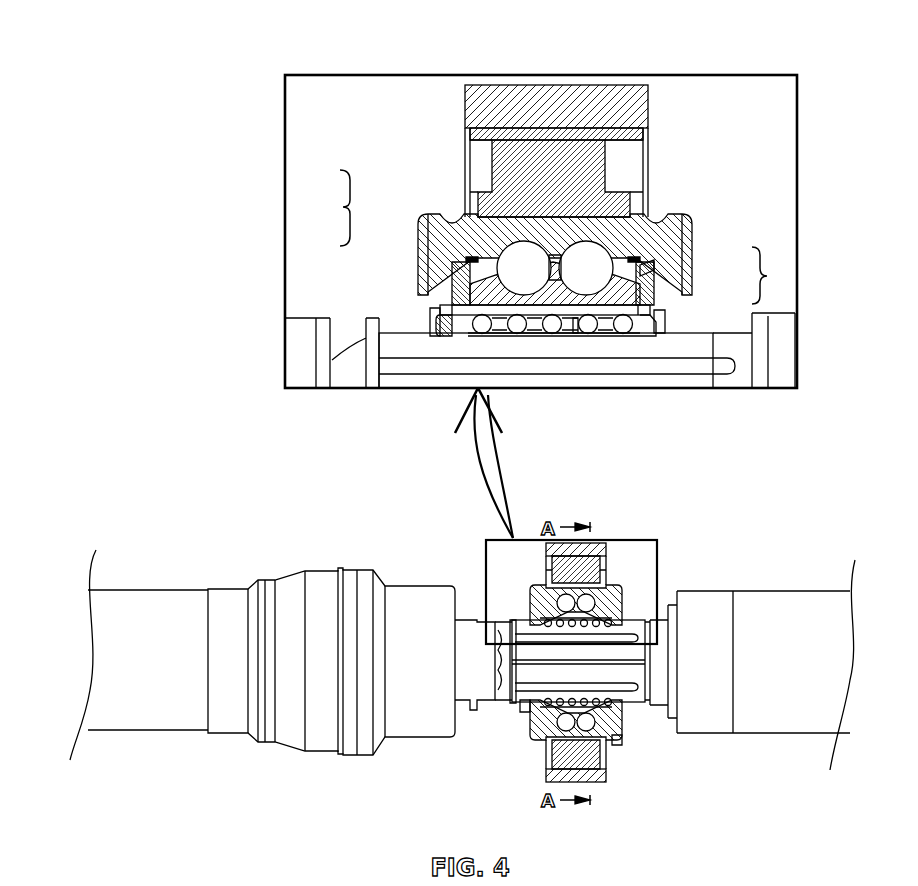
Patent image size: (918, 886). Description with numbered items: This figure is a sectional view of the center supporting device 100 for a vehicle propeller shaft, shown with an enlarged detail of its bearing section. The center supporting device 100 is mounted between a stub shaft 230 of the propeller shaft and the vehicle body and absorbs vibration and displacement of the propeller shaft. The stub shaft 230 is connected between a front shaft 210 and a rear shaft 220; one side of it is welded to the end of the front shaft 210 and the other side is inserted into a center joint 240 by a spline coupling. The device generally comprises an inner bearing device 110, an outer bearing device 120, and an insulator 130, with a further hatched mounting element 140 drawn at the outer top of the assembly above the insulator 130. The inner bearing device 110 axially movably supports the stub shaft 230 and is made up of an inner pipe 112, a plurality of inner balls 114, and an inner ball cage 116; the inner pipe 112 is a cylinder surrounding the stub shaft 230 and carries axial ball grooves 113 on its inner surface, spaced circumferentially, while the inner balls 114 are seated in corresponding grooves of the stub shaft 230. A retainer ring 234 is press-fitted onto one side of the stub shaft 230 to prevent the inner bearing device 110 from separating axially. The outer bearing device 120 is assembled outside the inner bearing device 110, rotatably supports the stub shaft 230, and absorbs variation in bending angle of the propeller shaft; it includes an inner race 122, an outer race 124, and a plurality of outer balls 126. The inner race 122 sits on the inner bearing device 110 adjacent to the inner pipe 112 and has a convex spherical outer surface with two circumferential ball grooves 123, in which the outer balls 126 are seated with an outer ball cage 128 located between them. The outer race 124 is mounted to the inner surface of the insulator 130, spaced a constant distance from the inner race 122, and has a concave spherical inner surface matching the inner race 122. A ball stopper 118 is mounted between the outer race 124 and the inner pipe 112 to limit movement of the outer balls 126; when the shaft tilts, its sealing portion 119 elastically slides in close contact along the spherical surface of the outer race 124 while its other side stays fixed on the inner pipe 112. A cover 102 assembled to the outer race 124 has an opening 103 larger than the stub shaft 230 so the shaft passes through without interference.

The center supporting device 100 is at (620, 590).
The cover 102 is at (683, 215).
The opening 103 is at (688, 325).
The inner bearing device 110 is at (767, 276).
The inner pipe 112 is at (673, 272).
The ball grooves 113 is at (445, 318).
The inner balls 114 is at (660, 290).
The inner ball cage 116 is at (647, 305).
The ball stopper 118 is at (448, 303).
The sealing portion 119 is at (660, 256).
The outer bearing device 120 is at (343, 207).
The inner race 122 is at (462, 285).
The ball grooves 123 is at (598, 333).
The outer race 124 is at (500, 250).
The outer balls 126 is at (462, 270).
The outer ball cage 128 is at (555, 250).
The insulator 130 is at (548, 150).
The mounting block 140 is at (613, 102).
The front shaft 210 is at (190, 590).
The rear shaft 220 is at (774, 733).
The stub shaft 230 is at (620, 680).
The retainer ring 234 is at (517, 703).
The center joint 240 is at (307, 573).